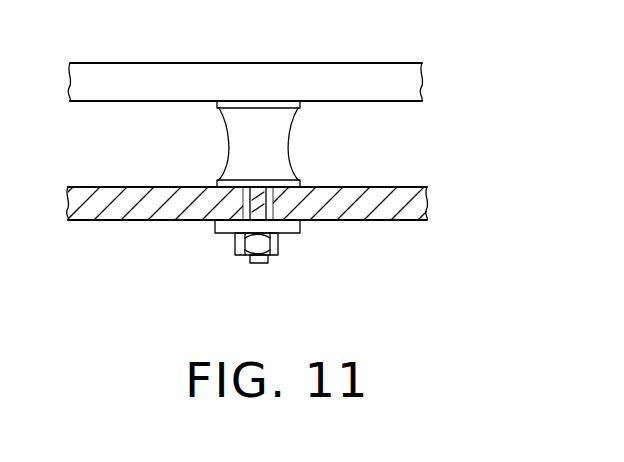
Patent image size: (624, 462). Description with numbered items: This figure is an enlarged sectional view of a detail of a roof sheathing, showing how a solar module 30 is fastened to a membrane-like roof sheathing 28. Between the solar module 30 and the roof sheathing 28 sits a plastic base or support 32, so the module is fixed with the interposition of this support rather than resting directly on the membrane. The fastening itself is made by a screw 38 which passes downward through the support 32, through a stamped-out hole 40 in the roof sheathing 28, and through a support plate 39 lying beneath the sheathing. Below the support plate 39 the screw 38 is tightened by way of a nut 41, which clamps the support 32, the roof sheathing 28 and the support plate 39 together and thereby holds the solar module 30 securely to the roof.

The membrane-like roof sheathing 28 is at (127, 207).
The solar module 30 is at (447, 72).
The plastic base or support 32 is at (270, 147).
The screw 38 is at (260, 267).
The support plate 39 is at (301, 226).
The stamped-out hole 40 is at (340, 181).
The nut 41 is at (279, 246).